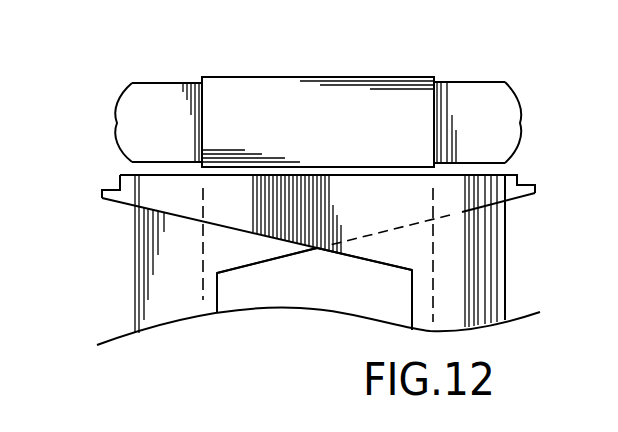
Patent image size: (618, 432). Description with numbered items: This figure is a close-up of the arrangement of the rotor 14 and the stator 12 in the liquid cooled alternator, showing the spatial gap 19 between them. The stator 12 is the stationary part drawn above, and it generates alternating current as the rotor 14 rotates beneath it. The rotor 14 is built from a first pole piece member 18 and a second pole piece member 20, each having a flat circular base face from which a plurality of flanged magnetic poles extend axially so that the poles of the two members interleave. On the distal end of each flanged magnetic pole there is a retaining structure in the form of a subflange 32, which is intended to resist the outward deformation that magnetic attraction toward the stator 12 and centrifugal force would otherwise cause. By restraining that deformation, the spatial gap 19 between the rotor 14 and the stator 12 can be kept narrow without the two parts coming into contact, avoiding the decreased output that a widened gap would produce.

The stator 12 is at (268, 70).
The rotor 14 is at (302, 288).
The first pole piece member 18 is at (516, 265).
The spatial gap 19 is at (325, 183).
The second pole piece member 20 is at (124, 277).
The subflange 32 is at (93, 179).